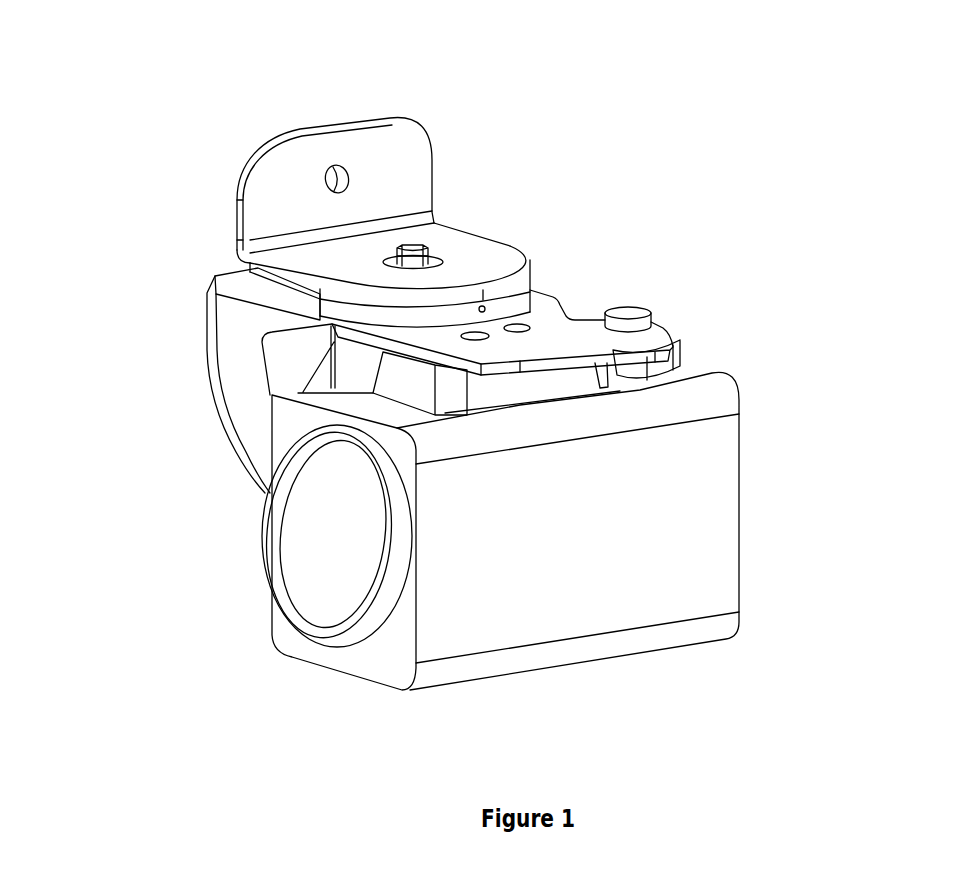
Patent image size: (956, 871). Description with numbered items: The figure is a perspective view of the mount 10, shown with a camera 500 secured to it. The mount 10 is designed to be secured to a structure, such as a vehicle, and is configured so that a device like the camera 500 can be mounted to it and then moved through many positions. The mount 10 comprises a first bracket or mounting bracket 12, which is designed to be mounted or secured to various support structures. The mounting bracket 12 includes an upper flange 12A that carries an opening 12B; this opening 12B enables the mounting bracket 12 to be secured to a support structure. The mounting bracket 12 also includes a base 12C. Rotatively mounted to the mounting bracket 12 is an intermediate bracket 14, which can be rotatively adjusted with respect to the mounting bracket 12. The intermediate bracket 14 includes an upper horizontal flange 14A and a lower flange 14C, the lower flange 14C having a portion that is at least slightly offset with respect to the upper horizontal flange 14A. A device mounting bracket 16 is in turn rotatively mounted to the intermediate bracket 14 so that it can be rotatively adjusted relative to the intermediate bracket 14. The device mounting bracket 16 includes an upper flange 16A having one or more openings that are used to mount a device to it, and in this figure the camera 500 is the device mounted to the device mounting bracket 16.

The mount 10 is at (487, 222).
The mounting bracket 12 is at (212, 179).
The upper flange 12A is at (400, 164).
The opening 12B is at (330, 150).
The base 12C is at (483, 265).
The intermediate bracket 14 is at (171, 409).
The upper horizontal flange 14A is at (244, 289).
The lower flange 14C is at (258, 412).
The device mounting bracket 16 is at (656, 275).
The upper flange 16A is at (565, 327).
The camera 500 is at (688, 492).